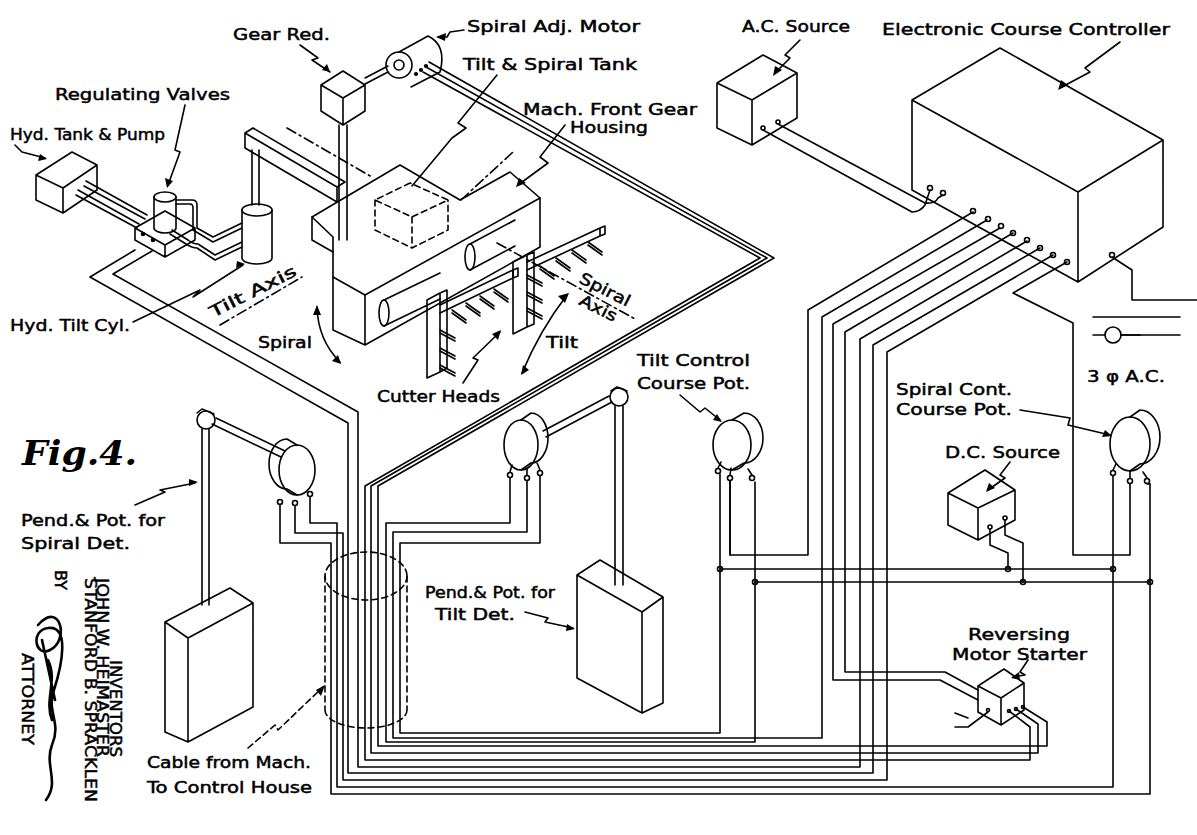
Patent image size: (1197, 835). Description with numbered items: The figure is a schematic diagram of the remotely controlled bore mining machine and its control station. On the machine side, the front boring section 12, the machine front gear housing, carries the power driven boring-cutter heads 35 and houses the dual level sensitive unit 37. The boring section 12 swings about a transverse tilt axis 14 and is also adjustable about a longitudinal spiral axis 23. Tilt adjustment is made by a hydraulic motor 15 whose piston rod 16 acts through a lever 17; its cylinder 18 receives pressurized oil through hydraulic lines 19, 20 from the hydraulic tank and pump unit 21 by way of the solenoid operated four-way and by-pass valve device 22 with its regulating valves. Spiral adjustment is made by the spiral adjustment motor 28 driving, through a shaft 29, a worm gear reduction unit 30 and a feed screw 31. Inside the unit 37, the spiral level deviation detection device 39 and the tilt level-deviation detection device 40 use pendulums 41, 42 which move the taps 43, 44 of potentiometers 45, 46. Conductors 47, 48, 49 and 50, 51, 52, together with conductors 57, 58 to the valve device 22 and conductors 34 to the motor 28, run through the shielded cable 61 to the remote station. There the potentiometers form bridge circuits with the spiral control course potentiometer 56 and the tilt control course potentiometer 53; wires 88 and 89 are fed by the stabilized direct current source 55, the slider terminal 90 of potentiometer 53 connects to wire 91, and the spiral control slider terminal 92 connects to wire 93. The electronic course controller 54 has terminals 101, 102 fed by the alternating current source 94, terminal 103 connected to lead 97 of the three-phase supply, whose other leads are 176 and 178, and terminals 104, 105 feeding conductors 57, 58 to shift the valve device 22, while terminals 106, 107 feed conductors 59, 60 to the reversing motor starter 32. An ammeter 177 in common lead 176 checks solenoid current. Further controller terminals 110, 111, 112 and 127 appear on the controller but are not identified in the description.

The front boring section 12 is at (528, 210).
The tilt axis 14 is at (270, 303).
The hydraulic motor 15 is at (242, 219).
The piston rod 16 is at (262, 182).
The lever 17 is at (265, 135).
The cylinder 18 is at (272, 231).
The hydraulic line 19 is at (117, 216).
The hydraulic line 20 is at (125, 200).
The hydraulic tank and pump unit 21 is at (55, 195).
The solenoid operated four-way and by-pass valve device 22 is at (163, 250).
The spiral axis 23 is at (305, 137).
The spiral adjustment motor 28 is at (412, 42).
The shaft 29 is at (380, 72).
The worm gear reduction unit 30 is at (328, 95).
The feed screw 31 is at (348, 140).
The reversing motor starter 32 is at (1018, 697).
The conductors 34 is at (720, 198).
The boring-cutter heads 35 is at (597, 248).
The dual level sensitive unit 37 is at (404, 198).
The spiral level deviation detection device 39 is at (198, 456).
The tilt level-deviation detection device 40 is at (628, 436).
The pendulum 41 is at (232, 625).
The pendulum 42 is at (590, 658).
The movable tap 43 is at (275, 478).
The movable tap 44 is at (542, 469).
The spiral detection potentiometer 45 is at (308, 467).
The tilt detection potentiometer 46 is at (517, 450).
The conductor 47 is at (280, 515).
The conductor 48 is at (293, 523).
The conductor 49 is at (325, 523).
The conductor 50 is at (508, 488).
The conductor 51 is at (527, 510).
The conductor 52 is at (547, 515).
The tilt control course potentiometer 53 is at (750, 435).
The electronic course controller 54 is at (1046, 135).
The direct current source 55 is at (950, 513).
The spiral control course potentiometer 56 is at (1144, 433).
The conductor 57 is at (288, 395).
The conductor 58 is at (335, 382).
The conductor 59 is at (933, 280).
The conductor 60 is at (907, 280).
The shielded cable 61 is at (408, 647).
The wire 88 is at (957, 567).
The wire 89 is at (957, 587).
The center tap 90 is at (727, 478).
The wire 91 is at (733, 513).
The center tap 92 is at (1133, 487).
The wire 93 is at (1130, 520).
The stabilized voltage source of alternating current 94 is at (800, 92).
The lead 97 is at (1140, 273).
The terminal 101 is at (928, 184).
The terminal 102 is at (943, 190).
The terminal 103 is at (1114, 254).
The controller terminal 104 is at (1028, 237).
The controller terminal 105 is at (1014, 230).
The controller terminal 106 is at (1002, 223).
The controller terminal 107 is at (1013, 185).
The terminal 110 is at (973, 208).
The terminal 111 is at (989, 216).
The terminal 112 is at (1055, 252).
The terminal 127 is at (1066, 265).
The common power lead 176 is at (230, 193).
The ammeter 177 is at (1123, 338).
The lead 178 is at (977, 725).